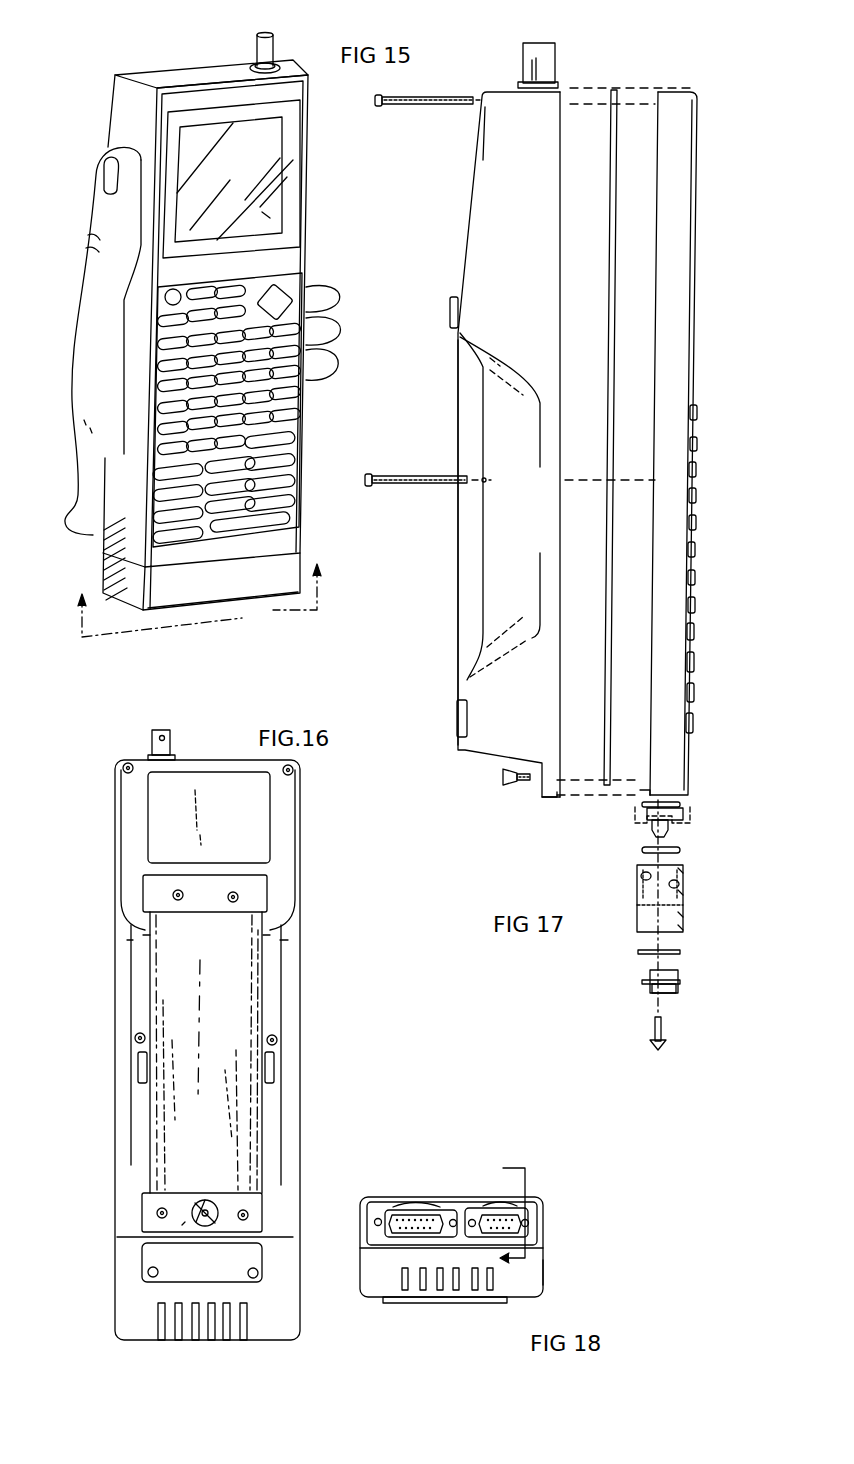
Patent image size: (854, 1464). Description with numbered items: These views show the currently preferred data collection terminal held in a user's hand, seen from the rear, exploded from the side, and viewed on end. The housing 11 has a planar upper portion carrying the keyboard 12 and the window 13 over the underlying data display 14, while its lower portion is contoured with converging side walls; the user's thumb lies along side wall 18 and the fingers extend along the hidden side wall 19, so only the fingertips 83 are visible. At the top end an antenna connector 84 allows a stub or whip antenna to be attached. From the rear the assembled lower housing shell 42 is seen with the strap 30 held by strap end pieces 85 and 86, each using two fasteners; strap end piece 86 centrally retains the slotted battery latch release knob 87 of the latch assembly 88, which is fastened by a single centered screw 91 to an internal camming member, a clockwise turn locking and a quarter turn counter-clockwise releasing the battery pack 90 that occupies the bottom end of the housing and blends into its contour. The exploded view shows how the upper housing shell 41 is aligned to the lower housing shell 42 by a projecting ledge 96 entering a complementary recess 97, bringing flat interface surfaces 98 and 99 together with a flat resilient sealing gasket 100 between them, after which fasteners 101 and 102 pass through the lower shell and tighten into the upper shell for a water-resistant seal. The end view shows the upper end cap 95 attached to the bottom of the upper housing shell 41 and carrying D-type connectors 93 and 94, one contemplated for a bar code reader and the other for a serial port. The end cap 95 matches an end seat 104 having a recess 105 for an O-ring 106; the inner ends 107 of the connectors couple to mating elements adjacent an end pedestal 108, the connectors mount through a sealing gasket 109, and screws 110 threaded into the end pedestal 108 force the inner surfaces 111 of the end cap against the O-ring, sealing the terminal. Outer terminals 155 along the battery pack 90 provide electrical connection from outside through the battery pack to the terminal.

In FIG. 15, the housing 11 is at (320, 236).
In FIG. 15, the keyboard 12 is at (290, 447).
In FIG. 15, the window 13 is at (280, 208).
In FIG. 15, the data display 14 is at (273, 148).
In FIG. 15, the side wall 18 is at (123, 122).
In FIG. 17, the side wall 18 is at (493, 207).
In FIG. 16, the side wall 19 is at (115, 870).
In FIG. 17, the strap 30 is at (457, 400).
In FIG. 16, the strap 30 is at (260, 1002).
In FIG. 15, the upper housing shell 41 is at (293, 543).
In FIG. 17, the upper housing shell 41 is at (688, 297).
In FIG. 17, the lower housing shell 42 is at (462, 263).
In FIG. 16, the lower housing shell 42 is at (287, 853).
In FIG. 15, the tips of the user's fingers 83 is at (345, 292).
In FIG. 15, the antenna connector 84 is at (273, 43).
In FIG. 17, the antenna connector 84 is at (538, 65).
In FIG. 16, the antenna connector 84 is at (173, 743).
In FIG. 16, the strap end piece 85 is at (263, 897).
In FIG. 16, the strap end piece 86 is at (260, 1207).
In FIG. 16, the battery latch release knob 87 is at (212, 1205).
In FIG. 16, the latch assembly 88 is at (182, 1220).
In FIG. 15, the battery pack 90 is at (270, 612).
In FIG. 18, the battery pack 90 is at (550, 1273).
In FIG. 16, the screw 91 is at (205, 1218).
In FIG. 17, the D-type connector 93 is at (678, 988).
In FIG. 18, the D-type connector 93 is at (482, 1208).
In FIG. 18, the D-type connector 94 is at (432, 1207).
In FIG. 18, the upper end cap 95 is at (547, 1228).
In FIG. 17, the projecting ledge 96 is at (642, 790).
In FIG. 17, the recess 97 is at (548, 799).
In FIG. 17, the flat interface surface 98 is at (657, 222).
In FIG. 17, the flat interface surface 99 is at (563, 227).
In FIG. 17, the sealing gasket 100 is at (608, 297).
In FIG. 17, the fastener 101 is at (416, 110).
In FIG. 17, the fastener 102 is at (503, 780).
In FIG. 17, the end seat 104 is at (685, 825).
In FIG. 17, the recess 105 is at (690, 807).
In FIG. 17, the O-ring 106 is at (680, 850).
In FIG. 17, the inner ends of the connectors 107 is at (675, 978).
In FIG. 17, the end pedestal 108 is at (650, 828).
In FIG. 17, the sealing gasket 109 is at (645, 953).
In FIG. 17, the screw 110 is at (663, 1035).
In FIG. 17, the inner surfaces 111 is at (643, 872).
In FIG. 16, the outer terminals 155 is at (195, 1330).
In FIG. 18, the outer terminals 155 is at (405, 1285).